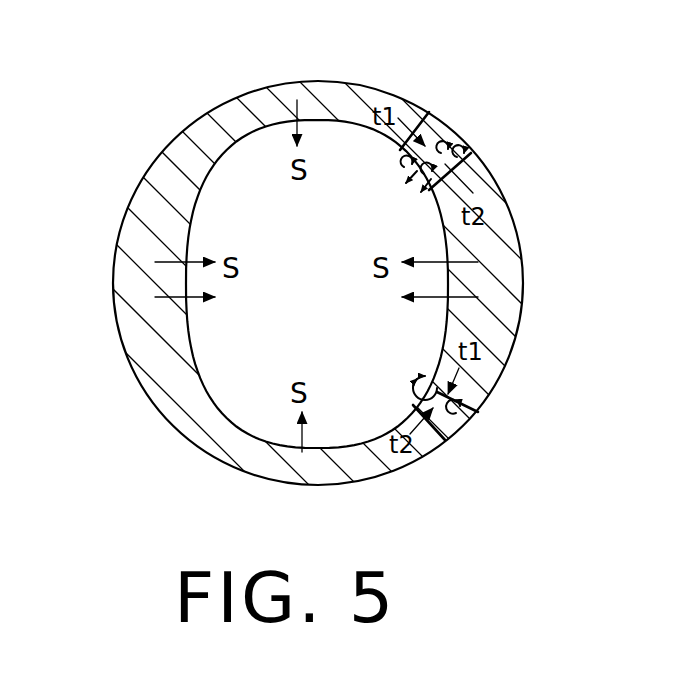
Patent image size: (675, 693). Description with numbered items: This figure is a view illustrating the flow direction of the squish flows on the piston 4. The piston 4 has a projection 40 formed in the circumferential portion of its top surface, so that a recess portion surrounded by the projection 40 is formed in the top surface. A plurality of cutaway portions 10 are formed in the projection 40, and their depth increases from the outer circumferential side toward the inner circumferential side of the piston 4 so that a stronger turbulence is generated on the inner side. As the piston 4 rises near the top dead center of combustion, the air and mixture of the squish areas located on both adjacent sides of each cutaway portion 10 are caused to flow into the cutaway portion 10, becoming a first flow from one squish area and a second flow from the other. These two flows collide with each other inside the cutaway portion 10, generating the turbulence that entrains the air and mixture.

The piston 4 is at (424, 99).
The cutaway portions 10 is at (440, 132).
The projection 40 is at (149, 195).